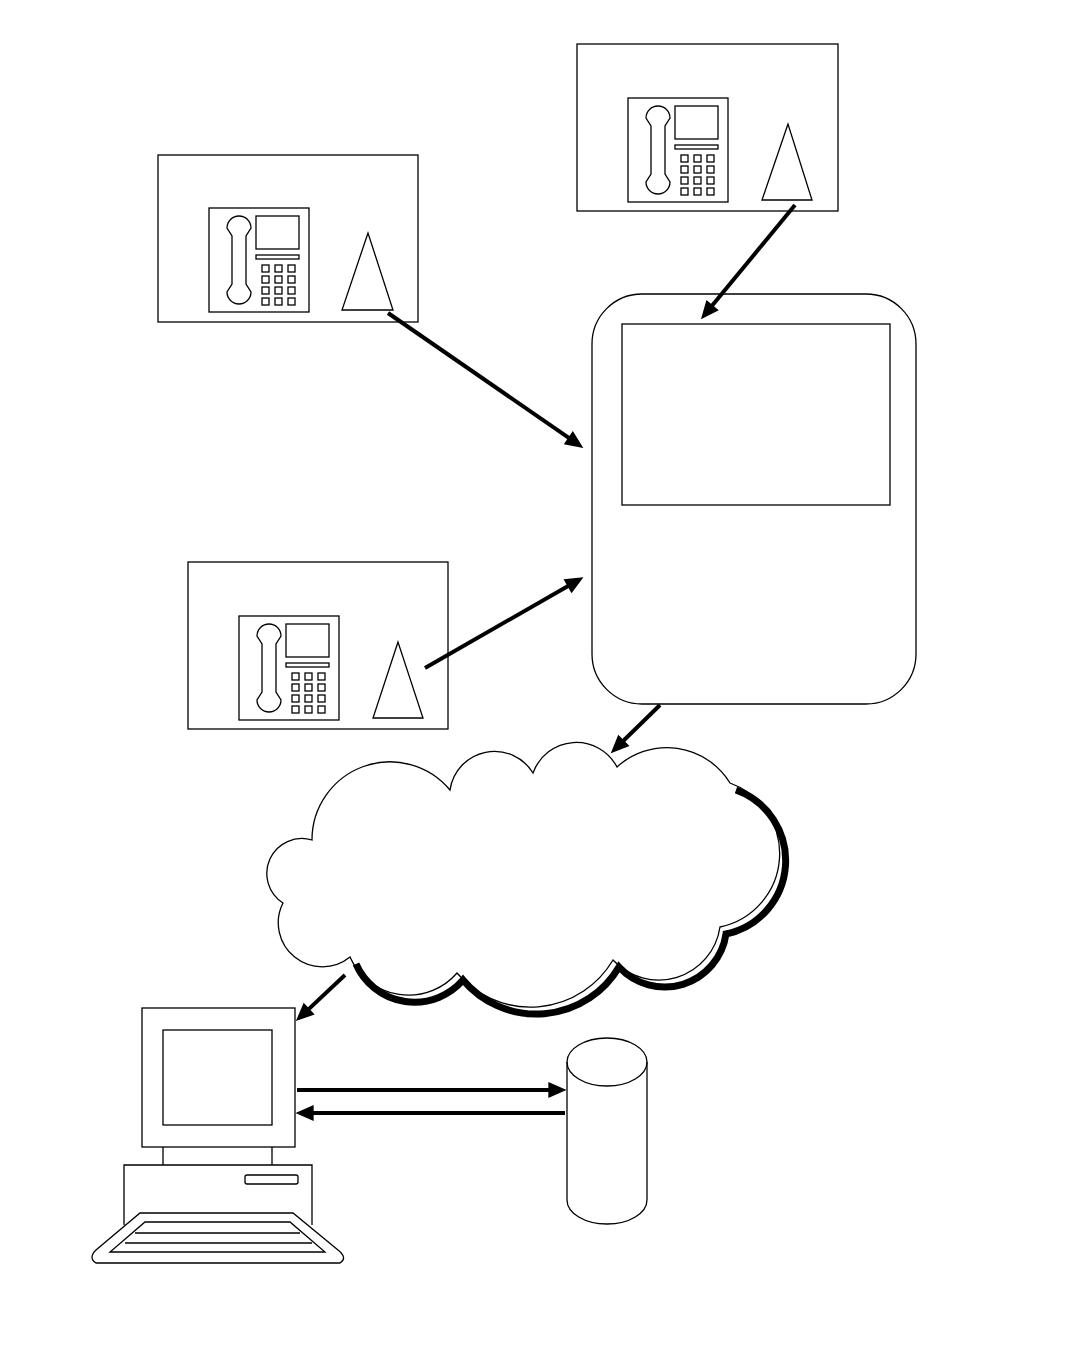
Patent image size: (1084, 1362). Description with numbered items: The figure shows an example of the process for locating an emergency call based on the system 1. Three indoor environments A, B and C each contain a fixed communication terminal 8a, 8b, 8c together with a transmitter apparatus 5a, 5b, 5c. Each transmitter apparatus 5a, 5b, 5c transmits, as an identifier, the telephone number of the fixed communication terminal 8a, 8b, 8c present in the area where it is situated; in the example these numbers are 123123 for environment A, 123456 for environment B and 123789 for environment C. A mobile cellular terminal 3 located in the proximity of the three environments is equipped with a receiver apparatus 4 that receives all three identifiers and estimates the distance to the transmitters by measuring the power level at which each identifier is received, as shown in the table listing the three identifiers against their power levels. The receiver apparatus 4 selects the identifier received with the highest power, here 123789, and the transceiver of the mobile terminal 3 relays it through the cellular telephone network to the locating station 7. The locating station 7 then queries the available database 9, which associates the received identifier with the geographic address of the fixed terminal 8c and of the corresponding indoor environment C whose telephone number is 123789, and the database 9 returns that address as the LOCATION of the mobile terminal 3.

The system 1 is at (888, 1243).
The mobile cellular terminal 3 is at (753, 303).
The receiver apparatus 4 is at (722, 478).
The transmitter apparatus 5a is at (783, 163).
The transmitter apparatus 5b is at (363, 273).
The transmitter apparatus 5c is at (397, 682).
The locating station 7 is at (243, 1020).
The fixed communication terminal 8a is at (650, 153).
The fixed communication terminal 8b is at (232, 265).
The fixed communication terminal 8c is at (260, 670).
The database 9 is at (600, 1057).
The indoor environment A is at (838, 80).
The indoor environment B is at (360, 155).
The indoor environment C is at (200, 560).